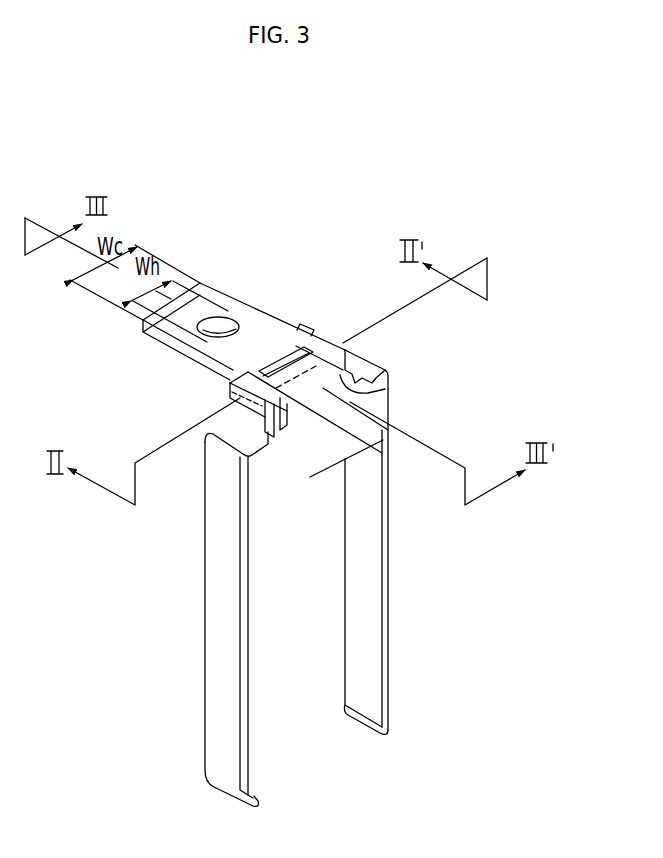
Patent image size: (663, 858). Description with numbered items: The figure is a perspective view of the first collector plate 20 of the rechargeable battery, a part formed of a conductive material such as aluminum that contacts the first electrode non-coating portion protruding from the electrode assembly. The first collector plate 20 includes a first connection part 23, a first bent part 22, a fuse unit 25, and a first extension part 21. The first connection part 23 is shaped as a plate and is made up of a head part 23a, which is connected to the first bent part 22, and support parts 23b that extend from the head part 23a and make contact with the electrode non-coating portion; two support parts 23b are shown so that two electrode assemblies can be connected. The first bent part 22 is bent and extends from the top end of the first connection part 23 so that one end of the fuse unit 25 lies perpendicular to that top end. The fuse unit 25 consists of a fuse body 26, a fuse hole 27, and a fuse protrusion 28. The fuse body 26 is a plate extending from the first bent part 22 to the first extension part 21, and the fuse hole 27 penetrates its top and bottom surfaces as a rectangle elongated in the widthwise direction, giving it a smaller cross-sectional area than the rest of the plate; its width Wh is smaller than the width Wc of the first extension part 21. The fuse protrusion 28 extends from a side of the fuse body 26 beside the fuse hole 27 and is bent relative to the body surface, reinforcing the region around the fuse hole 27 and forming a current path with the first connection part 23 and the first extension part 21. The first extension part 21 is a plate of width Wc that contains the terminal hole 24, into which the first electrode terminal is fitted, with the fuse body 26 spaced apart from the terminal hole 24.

The first collector plate 20 is at (381, 352).
The first extension part 21 is at (256, 335).
The first bent part 22 is at (386, 390).
The first connection part 23 is at (380, 618).
The head part 23a is at (275, 485).
The support part 23b is at (247, 637).
The terminal hole 24 is at (221, 320).
The fuse unit 25 is at (331, 331).
The fuse body 26 is at (308, 343).
The fuse hole 27 is at (285, 366).
The fuse protrusion 28 is at (229, 386).